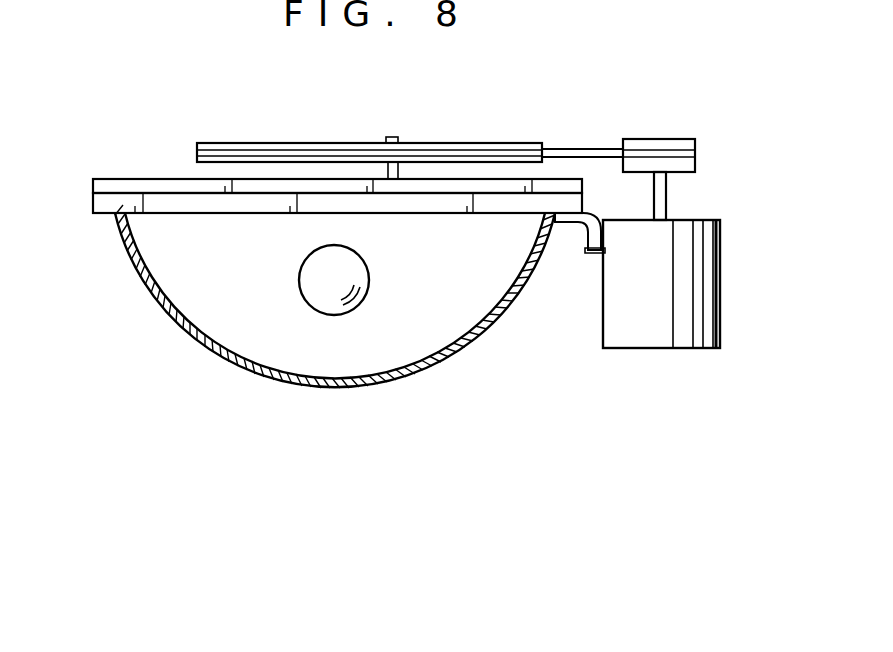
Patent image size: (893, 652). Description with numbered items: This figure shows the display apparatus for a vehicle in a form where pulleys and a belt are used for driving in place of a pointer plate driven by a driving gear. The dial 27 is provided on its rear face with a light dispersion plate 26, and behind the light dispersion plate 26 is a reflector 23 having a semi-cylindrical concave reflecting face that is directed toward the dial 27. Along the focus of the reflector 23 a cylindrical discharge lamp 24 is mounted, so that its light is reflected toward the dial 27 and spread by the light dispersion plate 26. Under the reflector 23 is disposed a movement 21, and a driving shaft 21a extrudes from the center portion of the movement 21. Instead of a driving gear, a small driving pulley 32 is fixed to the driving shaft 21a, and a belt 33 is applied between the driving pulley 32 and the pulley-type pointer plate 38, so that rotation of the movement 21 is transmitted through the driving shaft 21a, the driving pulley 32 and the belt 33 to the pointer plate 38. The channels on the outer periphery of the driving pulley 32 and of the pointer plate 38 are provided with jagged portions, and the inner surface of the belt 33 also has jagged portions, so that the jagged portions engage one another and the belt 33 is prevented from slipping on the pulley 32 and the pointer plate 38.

The movement 21 is at (722, 318).
The driving shaft 21a is at (668, 197).
The reflector 23 is at (462, 346).
The cylindrical discharge lamp 24 is at (308, 304).
The light dispersion plate 26 is at (93, 214).
The dial 27 is at (93, 181).
The small driving pulley 32 is at (688, 168).
The belt 33 is at (585, 149).
The pointer plate 38 is at (469, 143).